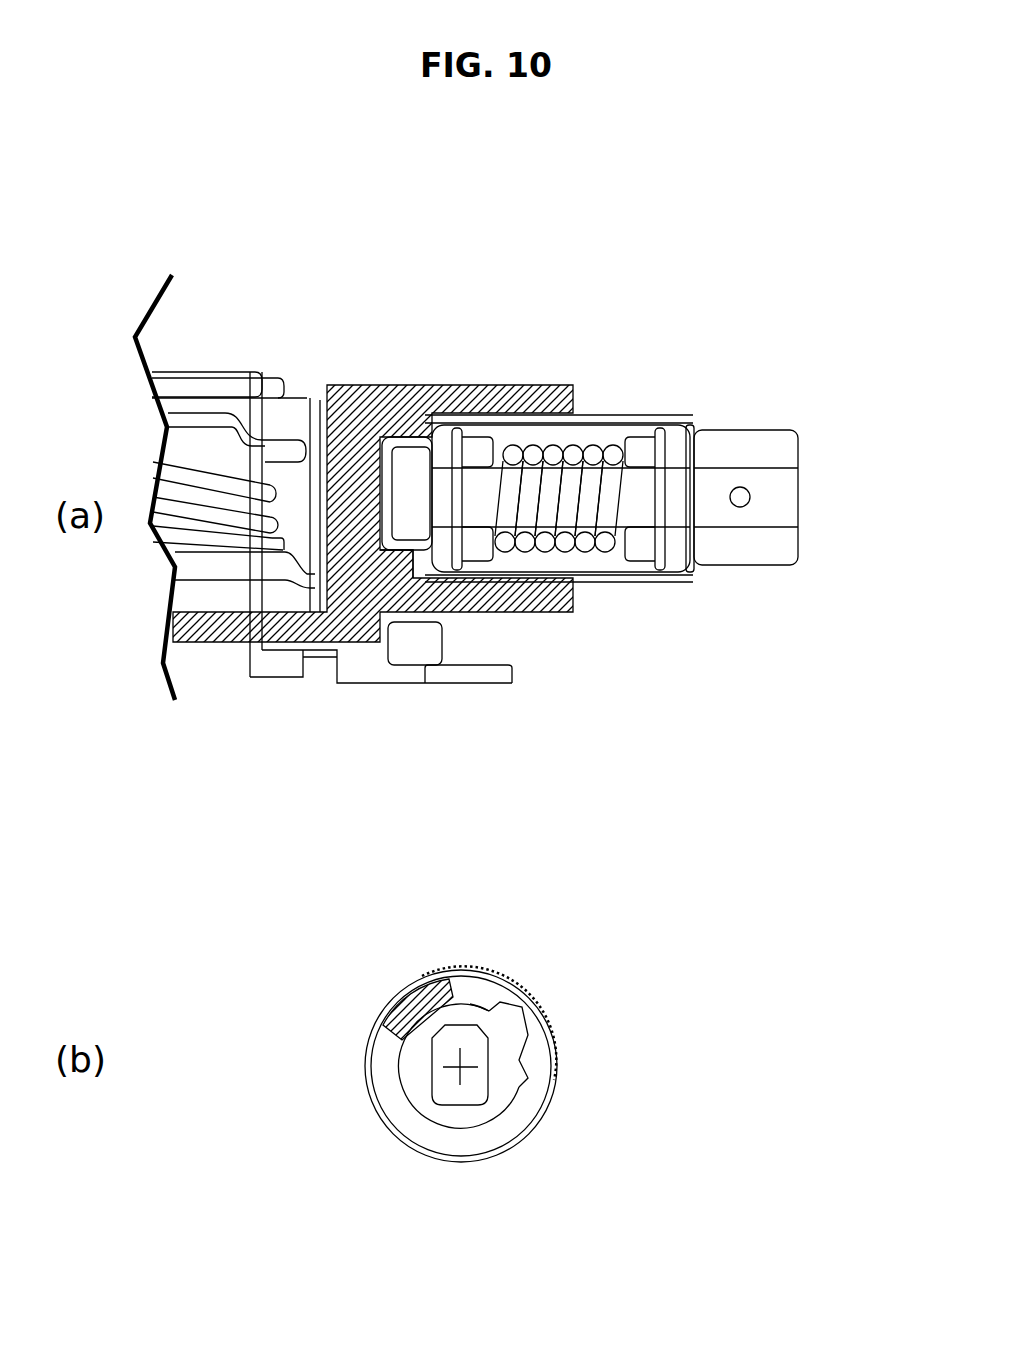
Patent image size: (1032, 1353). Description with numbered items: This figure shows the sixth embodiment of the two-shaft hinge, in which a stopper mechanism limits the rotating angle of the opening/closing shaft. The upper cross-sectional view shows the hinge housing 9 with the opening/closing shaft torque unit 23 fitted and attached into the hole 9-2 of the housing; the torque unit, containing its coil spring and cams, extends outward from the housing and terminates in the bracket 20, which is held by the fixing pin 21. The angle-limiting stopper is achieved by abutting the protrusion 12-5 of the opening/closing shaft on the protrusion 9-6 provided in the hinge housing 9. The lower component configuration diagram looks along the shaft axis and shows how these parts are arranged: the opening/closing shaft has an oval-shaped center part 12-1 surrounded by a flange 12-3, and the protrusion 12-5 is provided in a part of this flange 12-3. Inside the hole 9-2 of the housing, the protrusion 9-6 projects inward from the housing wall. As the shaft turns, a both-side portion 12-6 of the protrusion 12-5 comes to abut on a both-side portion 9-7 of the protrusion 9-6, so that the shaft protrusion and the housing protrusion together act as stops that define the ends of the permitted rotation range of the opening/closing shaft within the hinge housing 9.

The hinge housing 9 is at (373, 444).
The hole 9-2 is at (382, 1086).
The protrusion 9-6 is at (463, 795).
The both-side portion 9-7 is at (430, 972).
The oval-shaped center part 12-1 is at (398, 1143).
The flange 12-3 is at (575, 742).
The protrusion 12-5 is at (660, 1027).
The both-side portion 12-6 is at (540, 961).
The bracket 20 is at (784, 462).
The fixing pin 21 is at (821, 547).
The opening/closing shaft torque unit 23 is at (625, 440).